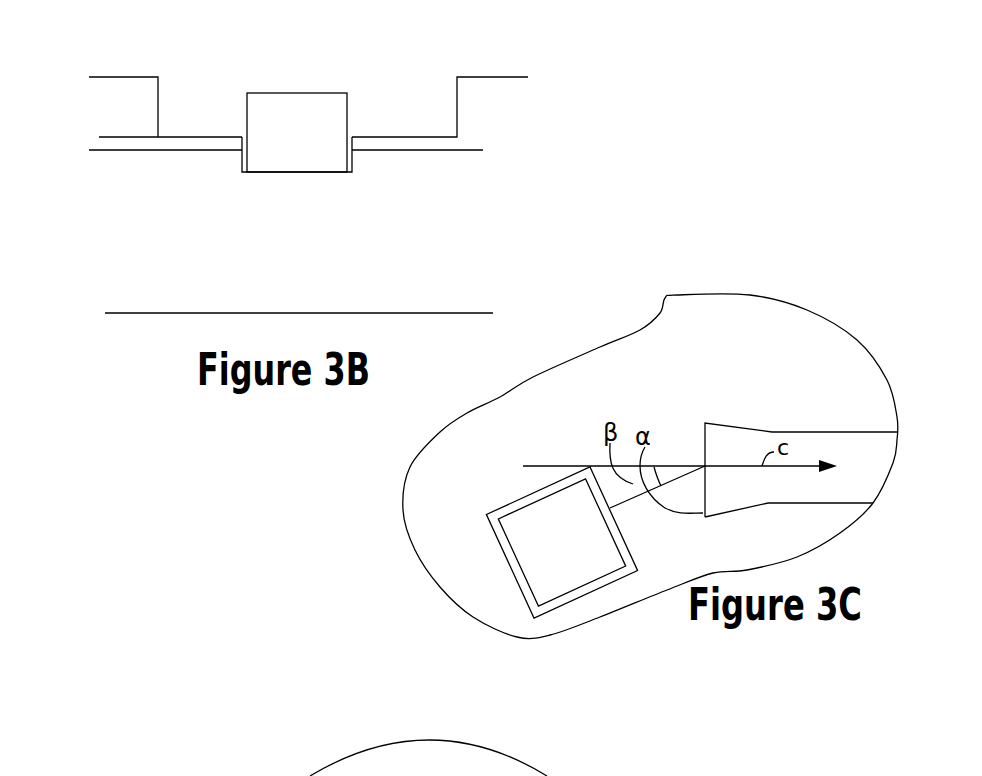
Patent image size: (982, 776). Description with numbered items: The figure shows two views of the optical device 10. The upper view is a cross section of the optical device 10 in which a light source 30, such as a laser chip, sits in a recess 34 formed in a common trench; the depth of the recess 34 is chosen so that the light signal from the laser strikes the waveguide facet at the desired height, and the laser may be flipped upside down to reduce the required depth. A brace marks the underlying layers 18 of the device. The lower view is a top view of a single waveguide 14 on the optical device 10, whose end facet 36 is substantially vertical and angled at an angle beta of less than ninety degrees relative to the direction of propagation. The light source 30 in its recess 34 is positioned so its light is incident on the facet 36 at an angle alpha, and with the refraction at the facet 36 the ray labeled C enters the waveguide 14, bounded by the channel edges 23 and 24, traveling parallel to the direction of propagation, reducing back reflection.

In FIG. 3B, the optical device 10 is at (548, 61).
In FIG. 3C, the optical device 10 is at (631, 314).
In FIG. 3C, the waveguide 14 is at (812, 432).
In FIG. 3B, the substrate layers 18 is at (67, 138).
In FIG. 3C, the tapered channel region 23 is at (745, 508).
In FIG. 3C, the channel wall 24 is at (782, 478).
In FIG. 3B, the light source 30 is at (298, 93).
In FIG. 3C, the light source 30 is at (503, 537).
In FIG. 3B, the recess 34 is at (160, 98).
In FIG. 3C, the recess 34 is at (512, 498).
In FIG. 3C, the facet 36 is at (705, 436).